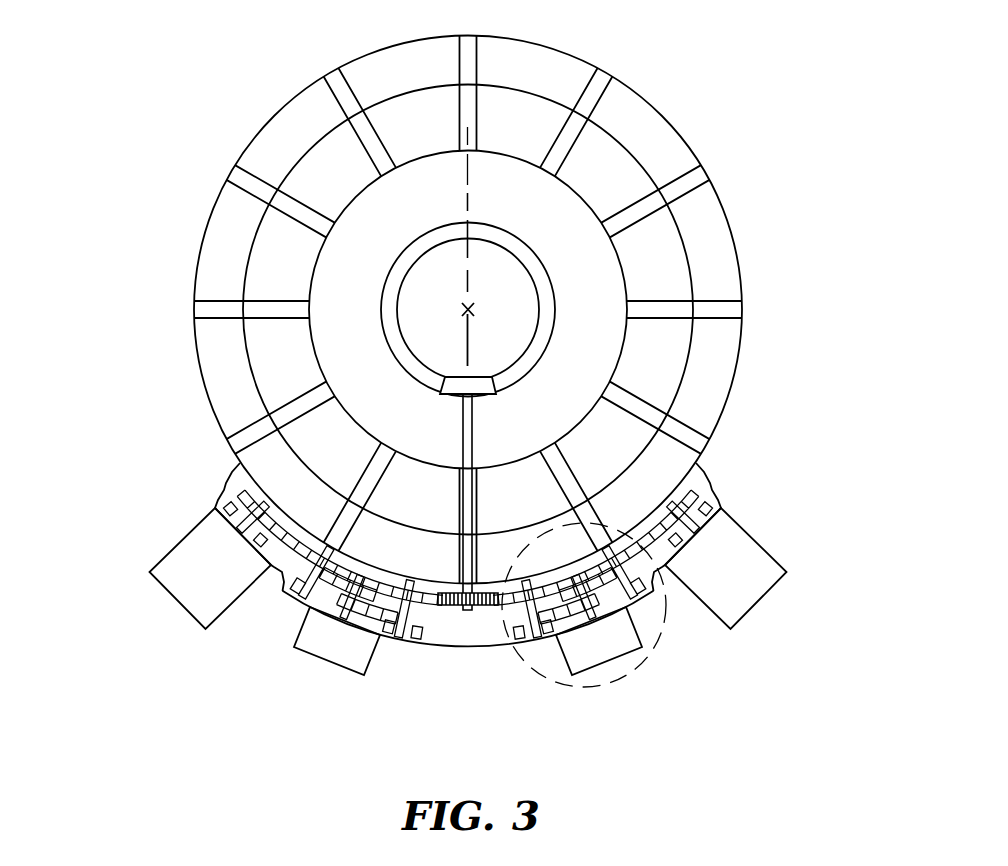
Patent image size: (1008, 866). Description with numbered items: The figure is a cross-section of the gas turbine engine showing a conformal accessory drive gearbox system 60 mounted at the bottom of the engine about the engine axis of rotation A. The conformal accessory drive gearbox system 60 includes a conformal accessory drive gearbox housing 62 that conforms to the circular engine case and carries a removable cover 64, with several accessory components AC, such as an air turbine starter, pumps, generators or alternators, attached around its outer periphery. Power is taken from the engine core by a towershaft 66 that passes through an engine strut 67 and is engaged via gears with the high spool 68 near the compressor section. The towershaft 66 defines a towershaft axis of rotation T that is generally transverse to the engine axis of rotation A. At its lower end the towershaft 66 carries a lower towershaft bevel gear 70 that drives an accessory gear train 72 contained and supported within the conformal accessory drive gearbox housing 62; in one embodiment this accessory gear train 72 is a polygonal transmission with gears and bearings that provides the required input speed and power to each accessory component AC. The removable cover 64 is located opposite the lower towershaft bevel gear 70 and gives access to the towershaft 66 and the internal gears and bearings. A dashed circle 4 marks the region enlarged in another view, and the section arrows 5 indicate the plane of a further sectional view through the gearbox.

The conformal accessory drive gearbox system 60 is at (212, 478).
The conformal accessory drive gearbox housing 62 is at (282, 592).
The removable cover 64 is at (450, 643).
The towershaft 66 is at (463, 430).
The engine strut 67 is at (433, 500).
The high spool 68 is at (537, 340).
The lower towershaft bevel gear 70 is at (481, 612).
The accessory gear train 72 is at (153, 458).
The engine axis of rotation A is at (473, 310).
The towershaft axis of rotation T is at (467, 183).
The accessory component AC is at (127, 565).
The detail region 4 is at (573, 692).
The section line 5- 5 is at (657, 500).